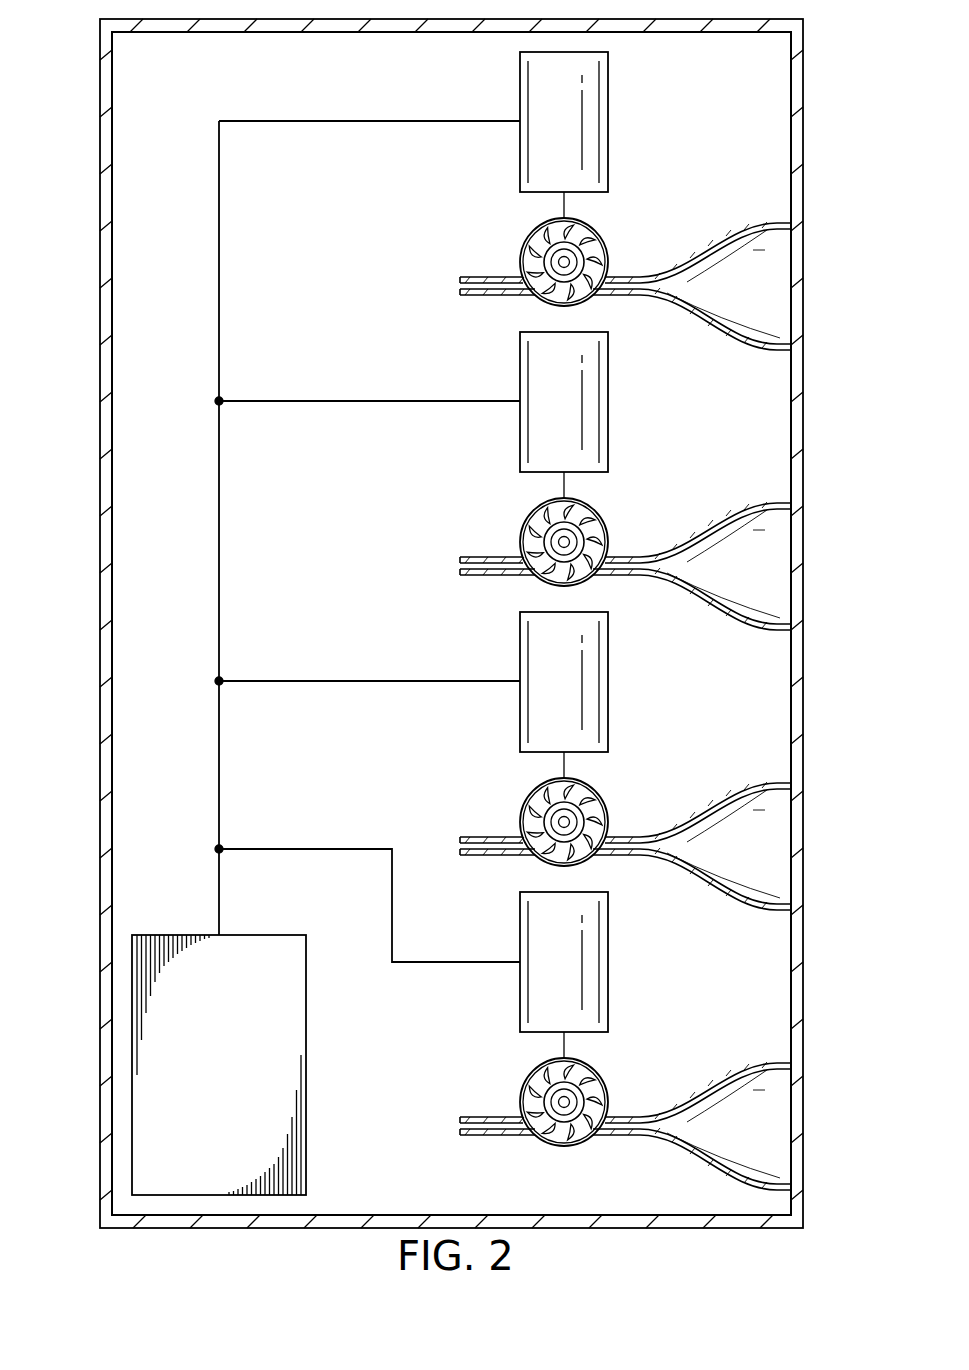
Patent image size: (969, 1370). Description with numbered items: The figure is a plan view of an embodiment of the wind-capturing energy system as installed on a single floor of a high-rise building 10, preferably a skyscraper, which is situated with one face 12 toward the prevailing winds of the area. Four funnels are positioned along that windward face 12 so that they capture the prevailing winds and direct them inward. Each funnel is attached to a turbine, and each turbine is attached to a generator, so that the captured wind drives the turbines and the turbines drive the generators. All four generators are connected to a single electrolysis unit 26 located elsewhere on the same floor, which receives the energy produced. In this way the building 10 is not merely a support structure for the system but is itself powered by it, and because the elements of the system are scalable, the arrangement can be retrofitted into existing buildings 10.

The high-rise building 10 is at (98, 533).
The face 12 is at (803, 420).
The electrolysis unit 26 is at (233, 1081).